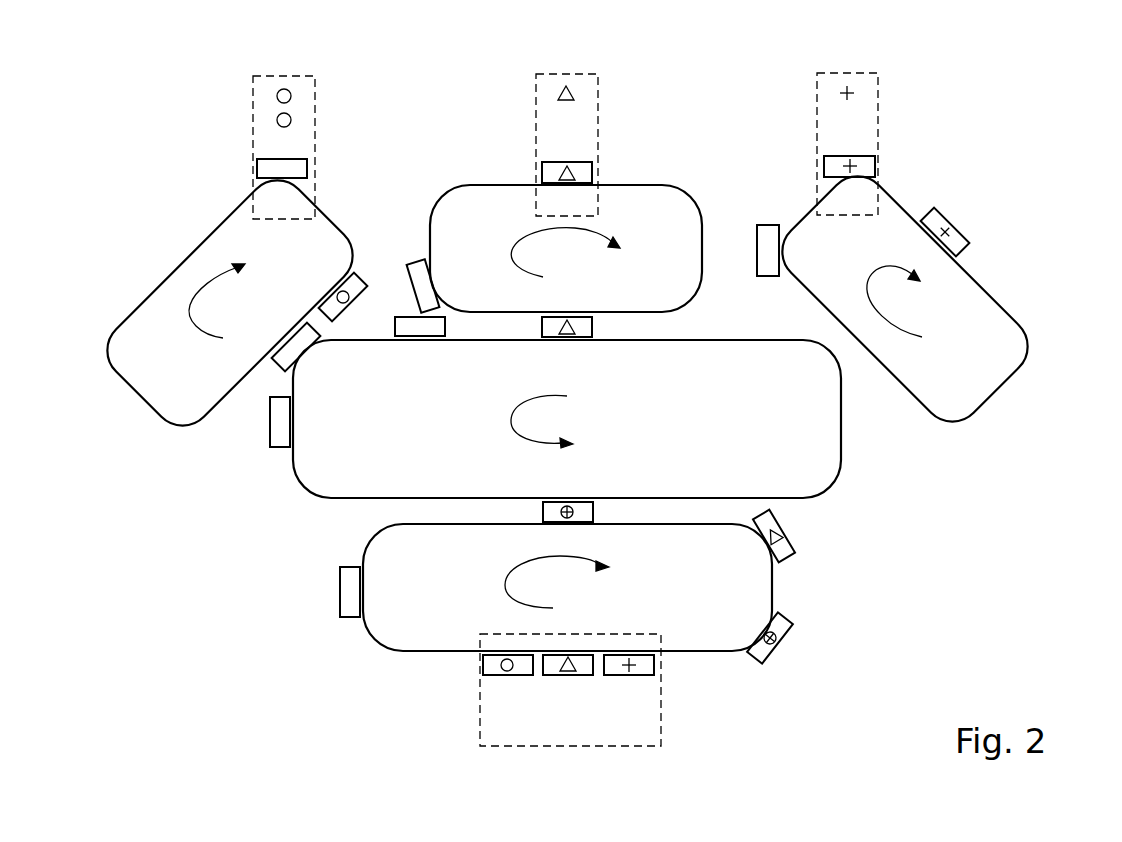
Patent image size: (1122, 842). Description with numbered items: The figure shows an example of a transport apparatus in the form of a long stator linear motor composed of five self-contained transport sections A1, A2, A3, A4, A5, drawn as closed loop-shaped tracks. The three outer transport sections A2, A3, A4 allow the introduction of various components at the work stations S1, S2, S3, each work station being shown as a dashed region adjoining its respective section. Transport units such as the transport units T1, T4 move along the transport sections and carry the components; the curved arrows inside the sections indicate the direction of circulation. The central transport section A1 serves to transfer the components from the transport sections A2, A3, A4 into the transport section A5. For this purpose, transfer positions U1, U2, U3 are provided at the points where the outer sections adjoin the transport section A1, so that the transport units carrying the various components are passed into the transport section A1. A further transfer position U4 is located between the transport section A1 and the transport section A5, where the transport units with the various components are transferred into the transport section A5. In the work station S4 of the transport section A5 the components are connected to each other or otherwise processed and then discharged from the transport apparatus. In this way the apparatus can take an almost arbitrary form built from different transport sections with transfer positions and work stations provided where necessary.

The transport section A1 is at (827, 485).
The transport section A2 is at (150, 417).
The transport section A3 is at (462, 186).
The transport section A4 is at (997, 297).
The transport section A5 is at (713, 652).
The work station S1 is at (253, 118).
The work station S2 is at (598, 109).
The work station S3 is at (878, 120).
The work station S4 is at (479, 688).
The transport unit T1 is at (592, 170).
The transport unit T4 is at (339, 593).
The transfer position U1 is at (318, 366).
The transfer position U2 is at (528, 349).
The transfer position U3 is at (821, 376).
The transfer position U4 is at (605, 487).